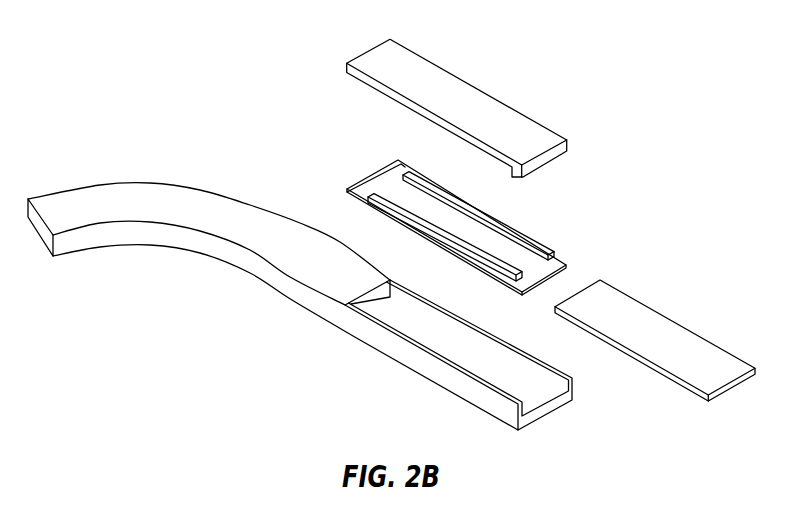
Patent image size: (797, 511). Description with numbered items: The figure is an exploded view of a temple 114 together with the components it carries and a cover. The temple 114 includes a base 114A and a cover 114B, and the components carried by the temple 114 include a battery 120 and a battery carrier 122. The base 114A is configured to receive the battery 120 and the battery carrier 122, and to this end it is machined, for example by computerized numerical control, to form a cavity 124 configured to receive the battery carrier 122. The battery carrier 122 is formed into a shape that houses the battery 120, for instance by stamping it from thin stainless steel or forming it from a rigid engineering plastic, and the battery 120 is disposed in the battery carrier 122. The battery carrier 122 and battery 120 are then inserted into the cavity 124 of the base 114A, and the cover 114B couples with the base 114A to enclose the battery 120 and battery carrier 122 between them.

The temple 114 is at (594, 63).
The base 114A is at (150, 188).
The cover 114B is at (469, 105).
The battery 120 is at (667, 340).
The battery carrier 122 is at (470, 212).
The cavity 124 is at (537, 396).